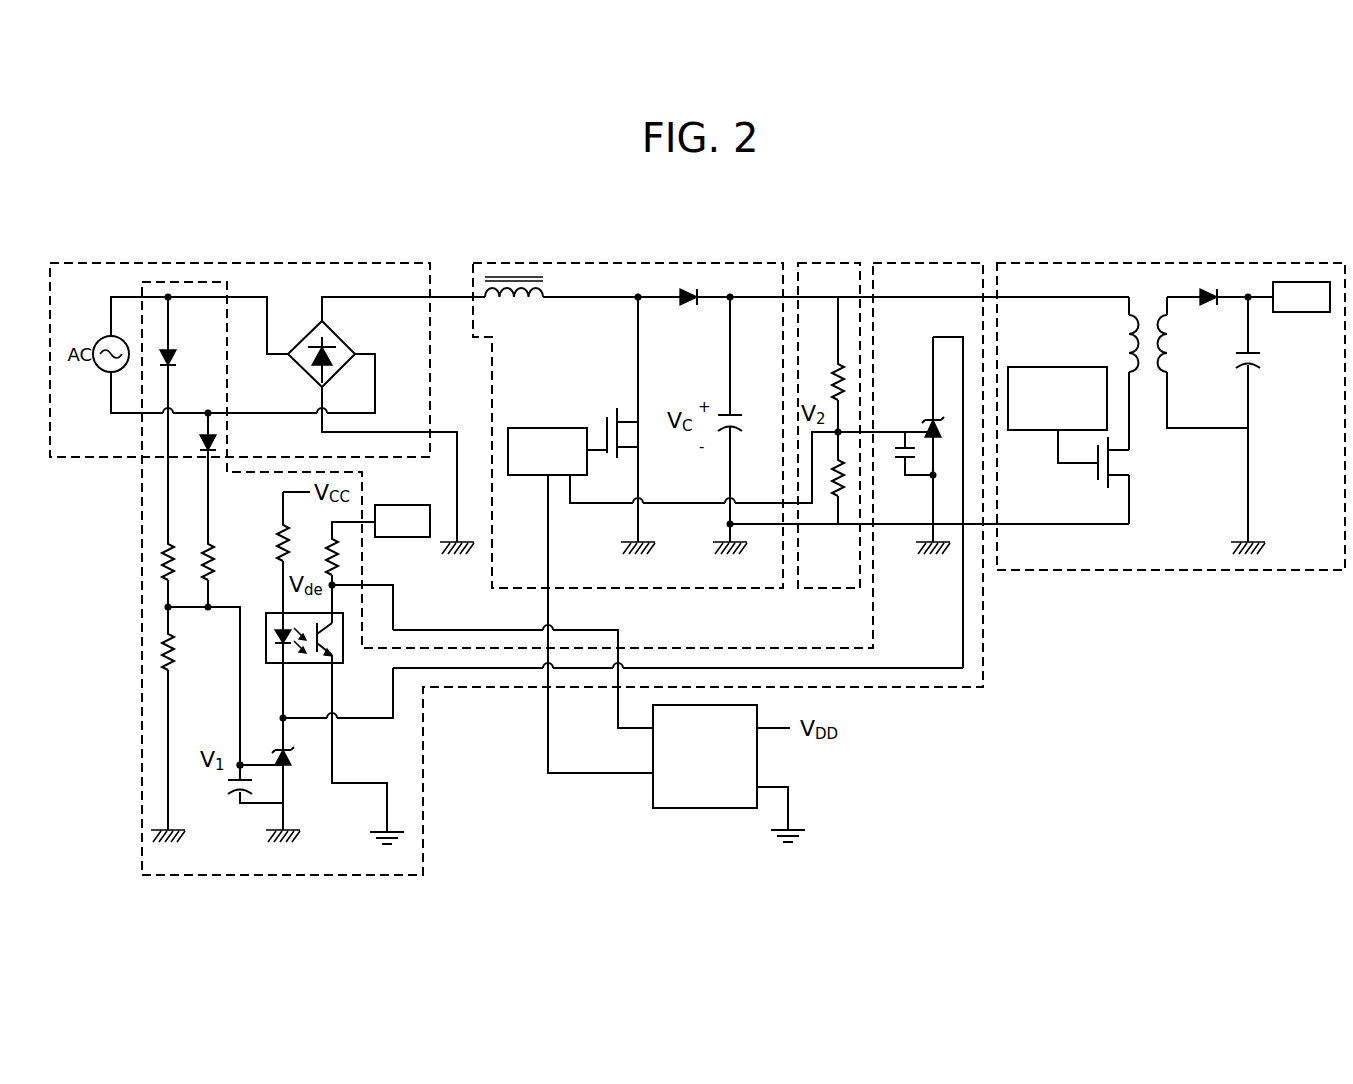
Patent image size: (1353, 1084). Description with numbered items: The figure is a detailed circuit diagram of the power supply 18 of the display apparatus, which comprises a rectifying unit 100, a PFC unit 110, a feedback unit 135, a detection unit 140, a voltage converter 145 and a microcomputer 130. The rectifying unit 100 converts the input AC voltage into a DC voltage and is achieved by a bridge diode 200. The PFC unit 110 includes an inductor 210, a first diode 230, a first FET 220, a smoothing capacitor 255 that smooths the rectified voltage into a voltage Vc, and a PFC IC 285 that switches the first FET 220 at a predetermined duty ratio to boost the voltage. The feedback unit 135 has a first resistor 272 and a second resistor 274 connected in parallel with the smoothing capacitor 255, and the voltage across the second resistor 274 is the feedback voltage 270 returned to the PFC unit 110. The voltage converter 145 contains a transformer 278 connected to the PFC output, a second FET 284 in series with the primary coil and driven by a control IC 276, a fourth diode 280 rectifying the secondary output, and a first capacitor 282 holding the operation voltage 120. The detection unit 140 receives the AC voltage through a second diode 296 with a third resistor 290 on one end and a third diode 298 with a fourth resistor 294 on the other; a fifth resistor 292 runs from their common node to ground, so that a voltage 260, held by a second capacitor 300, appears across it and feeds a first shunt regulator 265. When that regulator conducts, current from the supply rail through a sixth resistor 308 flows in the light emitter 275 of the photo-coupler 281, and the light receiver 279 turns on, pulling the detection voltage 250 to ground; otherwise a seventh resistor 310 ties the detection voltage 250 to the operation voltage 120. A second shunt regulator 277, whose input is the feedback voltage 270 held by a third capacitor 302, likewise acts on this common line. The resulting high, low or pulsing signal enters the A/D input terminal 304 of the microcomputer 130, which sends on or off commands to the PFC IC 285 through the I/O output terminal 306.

The power supply 18 is at (181, 172).
The second diode 296 is at (160, 346).
The rectifying unit 100 is at (257, 263).
The bridge diode 200 is at (304, 322).
The third diode 298 is at (200, 443).
The fourth resistor 294 is at (196, 550).
The third resistor 290 is at (160, 556).
The fifth resistor 292 is at (160, 655).
The sixth resistor 308 is at (285, 532).
The seventh resistor 310 is at (330, 553).
The light emitter 275 is at (276, 638).
The photo-coupler 281 is at (268, 657).
The light receiver 279 is at (330, 642).
The voltage V1 260 is at (240, 760).
The second capacitor 300 is at (236, 796).
The first shunt regulator 265 is at (289, 768).
The voltage Vde 250 is at (345, 586).
The operation voltage Vo 120 is at (408, 538).
The inductor 210 is at (503, 276).
The PFC unit 110 is at (584, 263).
The first diode 230 is at (682, 291).
The first field effect transistor 220 is at (637, 435).
The smoothing capacitor 255 is at (734, 413).
The PFC integrated circuit 285 is at (530, 476).
The first resistor 272 is at (836, 362).
The second resistor 274 is at (836, 496).
The feedback voltage V2 270 is at (824, 434).
The feedback unit 135 is at (827, 263).
The detection unit 140 is at (938, 263).
The second shunt regulator 277 is at (930, 420).
The third capacitor 302 is at (903, 460).
The voltage converter 145 is at (1077, 263).
The control IC 276 is at (1055, 367).
The second field effect transistor 284 is at (1130, 460).
The transformer 278 is at (1142, 318).
The fourth diode 280 is at (1205, 291).
The first capacitor 282 is at (1263, 362).
The microcomputer 130 is at (730, 809).
The input terminal (A/D port) 304 is at (693, 706).
The output terminal (I/O port) 306 is at (674, 786).